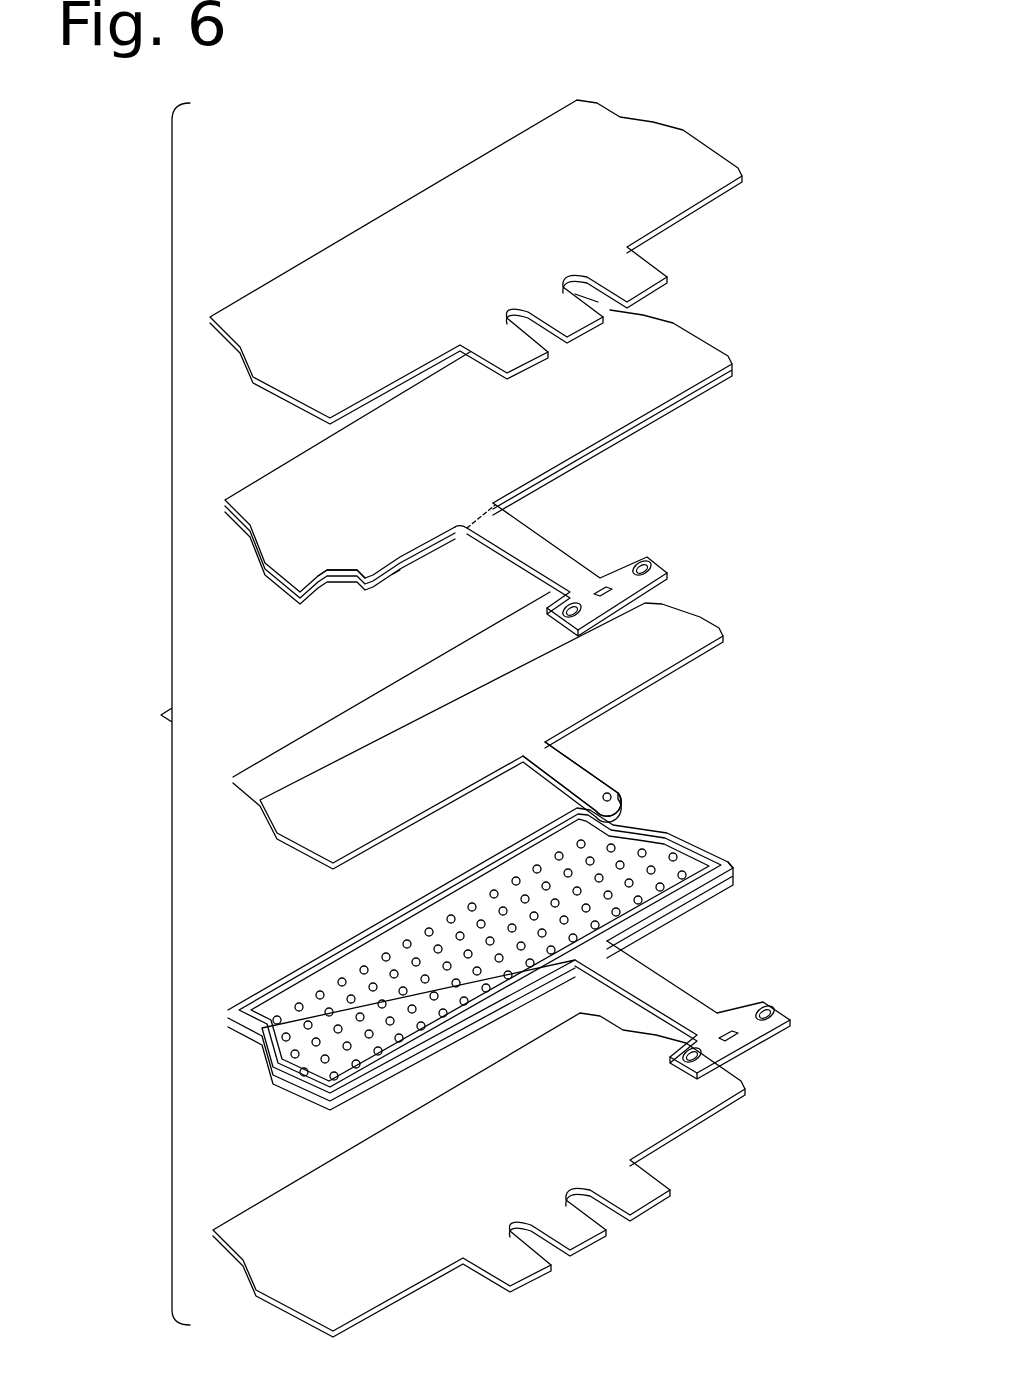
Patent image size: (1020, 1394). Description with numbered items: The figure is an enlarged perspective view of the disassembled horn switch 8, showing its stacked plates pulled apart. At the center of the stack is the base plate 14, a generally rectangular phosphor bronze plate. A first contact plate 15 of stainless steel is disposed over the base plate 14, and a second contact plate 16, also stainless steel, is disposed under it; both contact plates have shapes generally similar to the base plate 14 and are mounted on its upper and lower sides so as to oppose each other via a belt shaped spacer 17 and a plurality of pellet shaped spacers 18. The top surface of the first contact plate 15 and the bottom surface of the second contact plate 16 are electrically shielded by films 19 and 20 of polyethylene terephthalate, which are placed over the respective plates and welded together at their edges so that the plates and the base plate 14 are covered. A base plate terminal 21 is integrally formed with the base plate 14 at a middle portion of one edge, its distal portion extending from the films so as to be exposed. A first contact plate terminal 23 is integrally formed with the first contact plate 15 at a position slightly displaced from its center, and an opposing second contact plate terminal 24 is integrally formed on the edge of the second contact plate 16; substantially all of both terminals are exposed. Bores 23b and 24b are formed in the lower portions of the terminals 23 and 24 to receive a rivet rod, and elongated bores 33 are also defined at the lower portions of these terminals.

The horn switch 8 is at (157, 714).
The base plate 14 is at (698, 624).
The first contact plate 15 is at (702, 348).
The second contact plate 16 is at (690, 857).
The belt shaped spacer 17 is at (393, 574).
The pellet shaped spacers 18 is at (343, 582).
The film 19 is at (712, 152).
The film 20 is at (497, 1175).
The base plate terminal 21 is at (588, 772).
The first contact plate terminal 23 is at (507, 548).
The bore 23b is at (647, 566).
The second contact plate terminal 24 is at (660, 987).
The bore 24b is at (768, 1012).
The elongated bores 33 is at (607, 587).